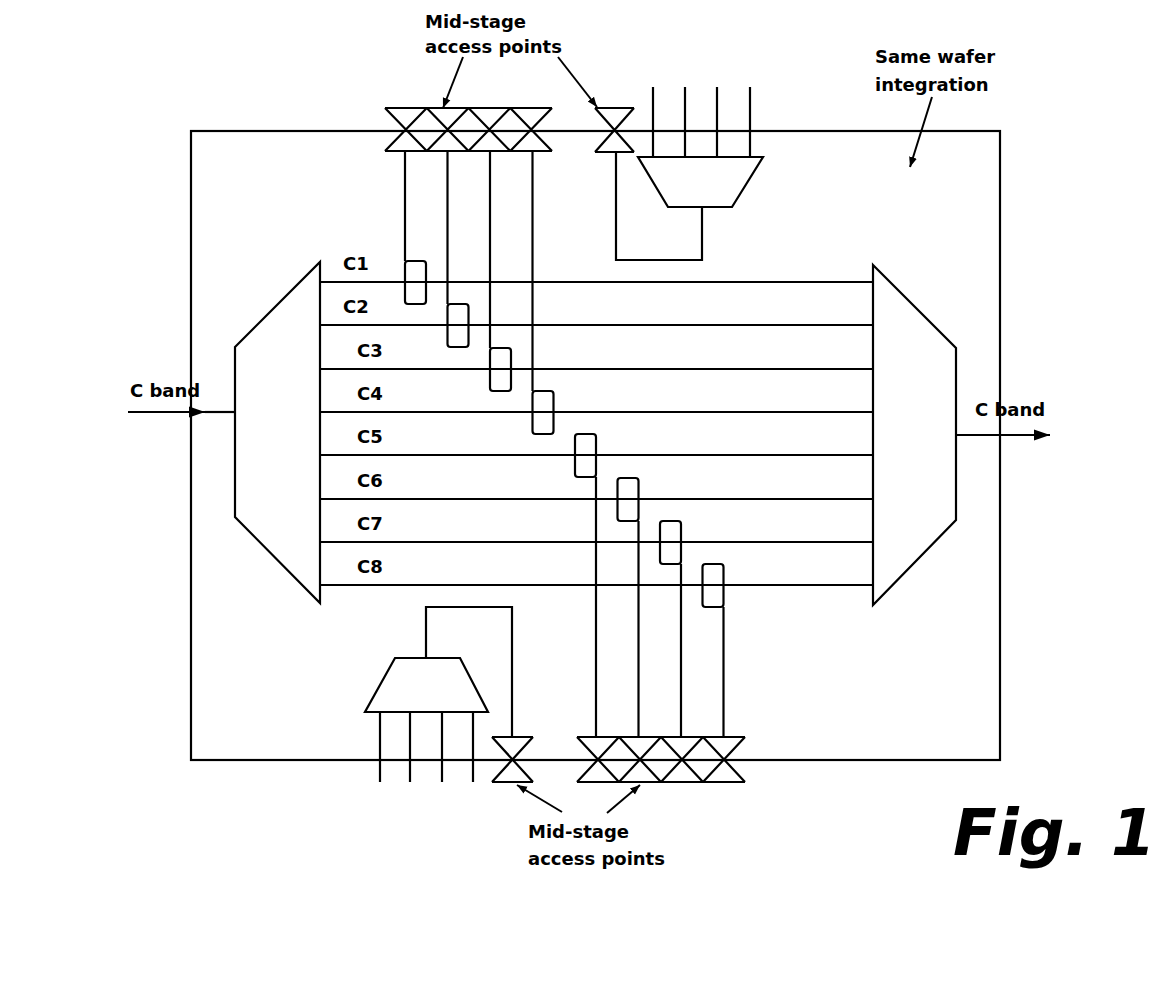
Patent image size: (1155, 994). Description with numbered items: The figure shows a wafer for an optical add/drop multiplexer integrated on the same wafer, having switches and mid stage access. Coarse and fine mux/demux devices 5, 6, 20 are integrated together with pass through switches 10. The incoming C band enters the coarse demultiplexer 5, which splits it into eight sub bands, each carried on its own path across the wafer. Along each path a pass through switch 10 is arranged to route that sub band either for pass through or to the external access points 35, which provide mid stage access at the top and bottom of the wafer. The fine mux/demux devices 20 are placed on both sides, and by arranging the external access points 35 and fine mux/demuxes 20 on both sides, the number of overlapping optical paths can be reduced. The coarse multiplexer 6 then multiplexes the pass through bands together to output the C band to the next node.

The coarse demultiplexer 5 is at (268, 452).
The coarse multiplexer 6 is at (898, 446).
The pass through switch 10 is at (420, 283).
The fine mux/demux device 20 is at (686, 193).
The external access points 35 is at (565, 455).